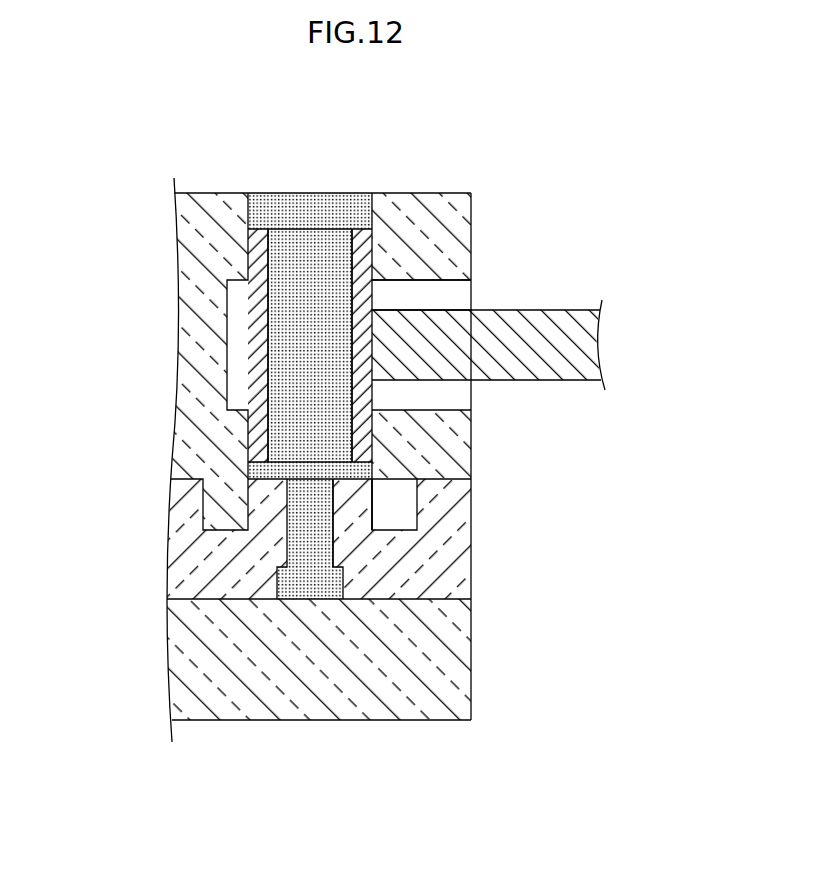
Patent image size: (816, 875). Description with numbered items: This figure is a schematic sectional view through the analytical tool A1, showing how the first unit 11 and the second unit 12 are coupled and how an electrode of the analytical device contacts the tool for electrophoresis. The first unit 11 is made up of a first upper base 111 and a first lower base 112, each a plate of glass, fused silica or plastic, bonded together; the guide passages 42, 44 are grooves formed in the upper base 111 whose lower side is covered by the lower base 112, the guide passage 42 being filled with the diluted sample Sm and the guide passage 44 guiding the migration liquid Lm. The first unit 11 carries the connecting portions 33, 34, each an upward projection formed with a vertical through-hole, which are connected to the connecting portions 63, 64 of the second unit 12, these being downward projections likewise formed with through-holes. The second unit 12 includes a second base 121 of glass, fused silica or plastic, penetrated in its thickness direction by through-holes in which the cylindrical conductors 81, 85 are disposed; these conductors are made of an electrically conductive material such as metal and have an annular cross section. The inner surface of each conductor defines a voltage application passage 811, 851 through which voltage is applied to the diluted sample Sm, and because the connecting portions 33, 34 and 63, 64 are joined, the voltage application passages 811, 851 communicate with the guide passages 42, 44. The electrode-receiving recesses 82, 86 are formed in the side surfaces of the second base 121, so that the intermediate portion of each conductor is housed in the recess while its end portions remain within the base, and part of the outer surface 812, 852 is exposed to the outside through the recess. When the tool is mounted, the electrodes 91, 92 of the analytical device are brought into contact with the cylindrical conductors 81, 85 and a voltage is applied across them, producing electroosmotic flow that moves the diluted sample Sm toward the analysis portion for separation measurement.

The analytical tool A1 is at (128, 174).
The first unit 11 is at (548, 563).
The first upper base 111 is at (450, 576).
The first lower base 112 is at (450, 636).
The second unit 12 is at (450, 229).
The second base 121 is at (386, 460).
The connecting portion 33 is at (451, 501).
The connecting portion 34 is at (364, 492).
The guide passage 42 is at (339, 627).
The guide passage 44 is at (312, 590).
The connecting portion 63 is at (468, 515).
The connecting portion 64 is at (393, 517).
The cylindrical conductor 81 is at (339, 174).
The cylindrical conductor 85 is at (362, 228).
The voltage application passage 811 is at (273, 299).
The voltage application passage 851 is at (266, 281).
The outer surface 812 is at (433, 345).
The outer surface 852 is at (373, 353).
The electrode-receiving recess 82 is at (479, 295).
The electrode-receiving recess 86 is at (413, 300).
The electrode 91 is at (533, 345).
The electrode 92 is at (580, 340).
The diluted sample Sm is at (196, 345).
The migration liquid Lm is at (290, 345).